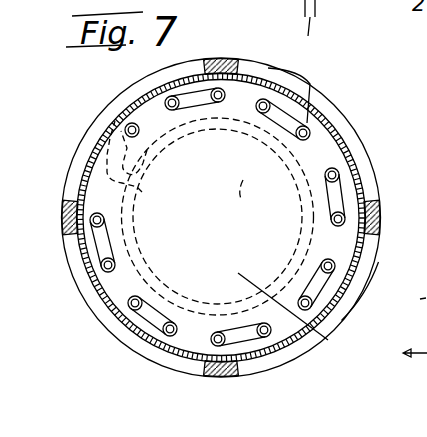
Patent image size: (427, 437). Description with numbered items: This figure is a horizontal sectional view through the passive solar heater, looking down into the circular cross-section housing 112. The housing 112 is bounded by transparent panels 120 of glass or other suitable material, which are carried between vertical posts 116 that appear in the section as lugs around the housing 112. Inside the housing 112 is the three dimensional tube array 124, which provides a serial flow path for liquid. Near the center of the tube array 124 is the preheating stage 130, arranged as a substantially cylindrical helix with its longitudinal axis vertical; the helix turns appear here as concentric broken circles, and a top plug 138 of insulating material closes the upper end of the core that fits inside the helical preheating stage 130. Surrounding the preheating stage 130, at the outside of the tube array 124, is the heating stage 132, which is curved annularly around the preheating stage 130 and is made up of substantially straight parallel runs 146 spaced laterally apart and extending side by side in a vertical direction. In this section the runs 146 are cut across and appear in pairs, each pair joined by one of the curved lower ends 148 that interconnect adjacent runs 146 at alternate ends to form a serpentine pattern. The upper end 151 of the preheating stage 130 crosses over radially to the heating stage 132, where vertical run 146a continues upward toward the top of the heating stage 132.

The housing 112 is at (339, 100).
The vertical posts 116 is at (379, 220).
The transparent panels 120 is at (349, 290).
The tube array 124 is at (129, 118).
The preheating stage 130 is at (265, 148).
The heating stage 132 is at (348, 165).
The top plug 138 is at (304, 317).
The runs 146 is at (272, 103).
The vertical run 146a is at (138, 133).
The lower ends 148 is at (140, 318).
The upper end of the preheating stage 151 is at (107, 176).